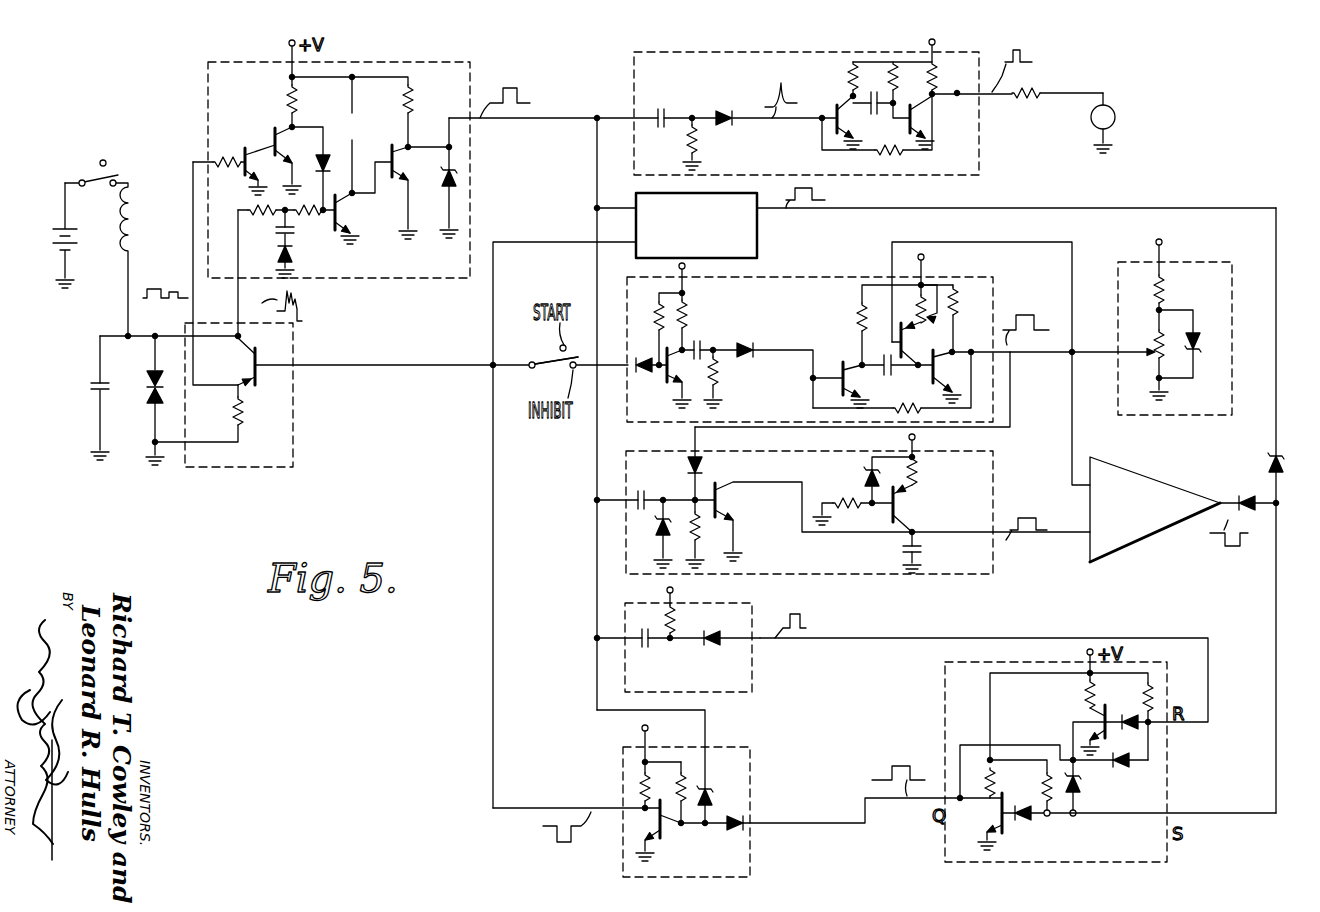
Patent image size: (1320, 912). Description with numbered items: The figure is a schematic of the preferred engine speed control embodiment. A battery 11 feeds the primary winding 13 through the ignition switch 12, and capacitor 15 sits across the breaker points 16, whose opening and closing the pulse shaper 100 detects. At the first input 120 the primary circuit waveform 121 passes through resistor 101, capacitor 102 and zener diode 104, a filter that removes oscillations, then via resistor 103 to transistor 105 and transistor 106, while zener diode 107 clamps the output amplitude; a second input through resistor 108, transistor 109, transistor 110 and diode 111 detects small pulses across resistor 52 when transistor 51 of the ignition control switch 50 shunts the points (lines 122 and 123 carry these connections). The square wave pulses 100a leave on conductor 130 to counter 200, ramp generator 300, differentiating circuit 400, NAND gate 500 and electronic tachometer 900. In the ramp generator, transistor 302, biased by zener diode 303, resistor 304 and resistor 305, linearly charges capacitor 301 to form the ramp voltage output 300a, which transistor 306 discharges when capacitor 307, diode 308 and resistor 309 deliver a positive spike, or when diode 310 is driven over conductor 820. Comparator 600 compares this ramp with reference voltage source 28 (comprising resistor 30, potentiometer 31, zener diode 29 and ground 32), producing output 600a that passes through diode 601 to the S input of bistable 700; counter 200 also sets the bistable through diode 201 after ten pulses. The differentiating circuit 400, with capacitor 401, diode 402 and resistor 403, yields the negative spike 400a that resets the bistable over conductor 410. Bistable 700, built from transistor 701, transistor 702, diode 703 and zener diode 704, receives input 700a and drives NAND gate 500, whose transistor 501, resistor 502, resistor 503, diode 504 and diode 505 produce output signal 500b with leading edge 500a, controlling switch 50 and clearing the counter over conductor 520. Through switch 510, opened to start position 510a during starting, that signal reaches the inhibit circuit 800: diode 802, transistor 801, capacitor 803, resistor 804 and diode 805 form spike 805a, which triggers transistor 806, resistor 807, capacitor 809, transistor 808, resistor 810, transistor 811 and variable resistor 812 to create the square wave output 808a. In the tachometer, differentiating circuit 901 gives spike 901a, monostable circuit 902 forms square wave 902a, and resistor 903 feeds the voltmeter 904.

The battery 11 is at (62, 228).
The ignition switch 12 is at (98, 176).
The primary winding 13 is at (140, 207).
The capacitor 15 is at (98, 382).
The breaker points 16 is at (148, 394).
The reference voltage source 28 is at (1210, 262).
The zener diode 29 is at (1197, 351).
The resistor 30 is at (1166, 291).
The potentiometer 31 is at (1150, 344).
The ground connection 32 is at (1150, 370).
The ignition control switch 50 is at (293, 440).
The NPN transistor 51 is at (257, 355).
The resistor 52 is at (244, 412).
The pulse shaper 100 is at (378, 278).
The square wave pulses 100a is at (530, 78).
The resistor 101 is at (246, 208).
The capacitor 102 is at (280, 232).
The resistor 103 is at (292, 252).
The zener diode 104 is at (293, 284).
The NPN transistor 105 is at (344, 208).
The transistor 106 is at (392, 146).
The zener diode 107 is at (462, 178).
The resistor 108 is at (217, 158).
The transistor 109 is at (244, 154).
The transistor 110 is at (281, 110).
The diode 111 is at (326, 152).
The first input 120 is at (238, 296).
The primary circuit waveform 121 is at (302, 324).
The line 122 is at (193, 208).
The waveform 123 is at (143, 298).
The conductor 130 is at (558, 120).
The counter 200 is at (812, 250).
The diode 201 is at (1280, 454).
The ramp generator 300 is at (1045, 484).
The ramp voltage output 300a is at (1001, 512).
The capacitor 301 is at (924, 550).
The PNP transistor 302 is at (904, 507).
The zener diode 303 is at (866, 474).
The resistor 304 is at (848, 512).
The resistor 305 is at (916, 468).
The NPN transistor 306 is at (734, 504).
The capacitor 307 is at (655, 482).
The diode 308 is at (654, 534).
The resistor 309 is at (707, 523).
The diode 310 is at (703, 464).
The differentiating circuit 400 is at (752, 662).
The negative voltage spike 400a is at (806, 616).
The capacitor 401 is at (654, 646).
The diode 402 is at (720, 646).
The resistor 403 is at (676, 634).
The conductor 410 is at (973, 638).
The NAND gate 500 is at (808, 759).
The negative going leading edge 500a is at (563, 846).
The output signal 500b is at (529, 842).
The NPN transistor 501 is at (655, 823).
The resistor 502 is at (636, 783).
The resistor 503 is at (681, 800).
The diode 504 is at (717, 793).
The diode 505 is at (747, 828).
The switch 510 is at (547, 360).
The start position 510a is at (550, 354).
The conductor 520 is at (493, 558).
The comparator 600 is at (1198, 574).
The comparator output waveform 600a is at (1235, 552).
The diode 601 is at (1242, 496).
The bistable 700 is at (944, 714).
The input waveform 700a is at (898, 766).
The NPN transistor 701 is at (1012, 828).
The NPN transistor 702 is at (1080, 720).
The diode 703 is at (1118, 765).
The zener diode 704 is at (1080, 794).
The inhibit circuit 800 is at (993, 378).
The NPN transistor 801 is at (667, 376).
The diode 802 is at (642, 354).
The capacitor 803 is at (698, 342).
The resistor 804 is at (725, 382).
The diode 805 is at (750, 344).
The positive voltage spike 805a is at (769, 324).
The NPN transistor 806 is at (838, 366).
The resistor 807 is at (856, 317).
The NPN transistor 808 is at (944, 362).
The square wave output 808a is at (1049, 317).
The capacitor 809 is at (876, 372).
The resistor 810 is at (962, 303).
The PNP transistor 811 is at (904, 336).
The variable resistor 812 is at (923, 306).
The conductor 820 is at (1014, 422).
The electronic tachometer 900 is at (612, 72).
The differentiating circuit 901 is at (708, 104).
The positive spike pulse 901a is at (783, 94).
The monostable circuit 902 is at (810, 156).
The square wave 902a is at (1032, 52).
The resistor 903 is at (1022, 100).
The voltmeter 904 is at (1118, 115).